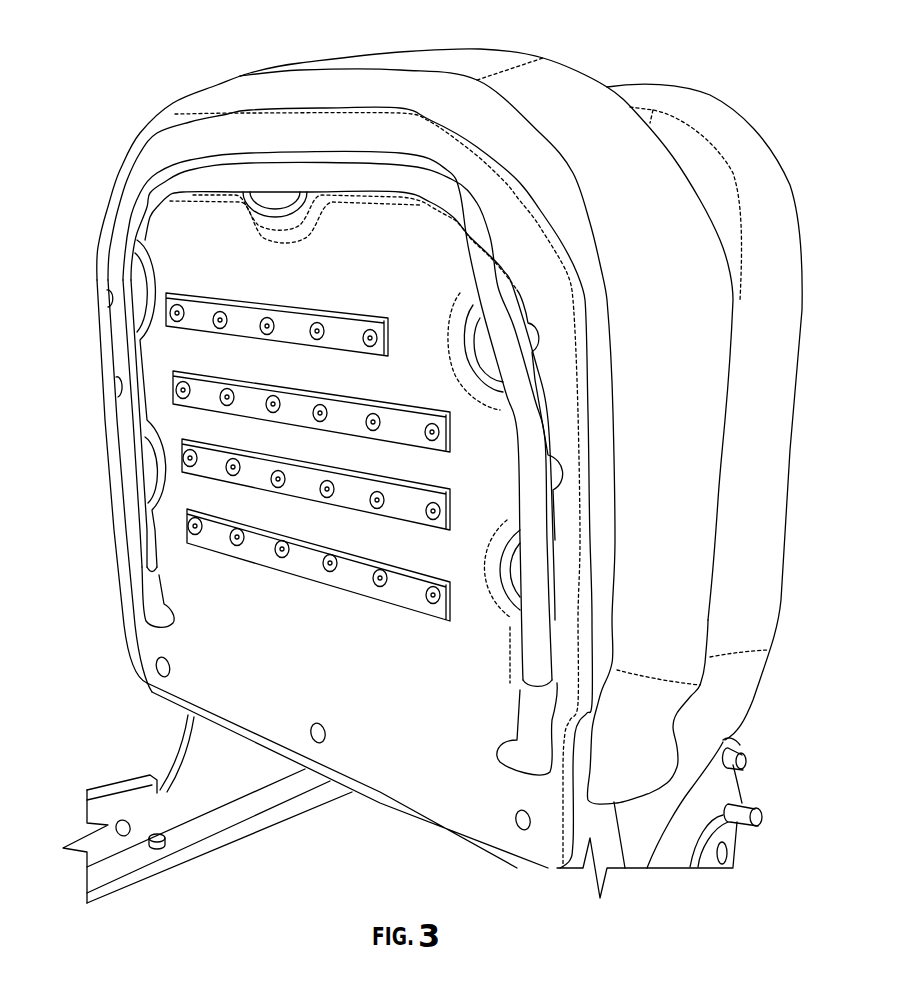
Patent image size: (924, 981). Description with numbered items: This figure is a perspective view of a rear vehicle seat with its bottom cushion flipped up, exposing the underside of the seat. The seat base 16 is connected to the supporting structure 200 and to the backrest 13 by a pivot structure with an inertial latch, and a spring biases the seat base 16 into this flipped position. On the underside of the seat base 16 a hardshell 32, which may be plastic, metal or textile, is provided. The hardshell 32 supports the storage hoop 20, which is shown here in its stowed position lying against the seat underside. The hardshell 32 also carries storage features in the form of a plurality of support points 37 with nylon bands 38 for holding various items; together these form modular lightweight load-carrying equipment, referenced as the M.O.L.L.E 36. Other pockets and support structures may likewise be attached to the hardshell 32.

The backrest 13 is at (708, 118).
The seat base 16 is at (380, 80).
The storage hoop 20 is at (134, 411).
The hardshell 32 is at (207, 627).
The M.O.L.L.E 36 is at (363, 312).
The support points 37 is at (277, 552).
The nylon bands 38 is at (400, 587).
The supporting structure 200 is at (270, 812).